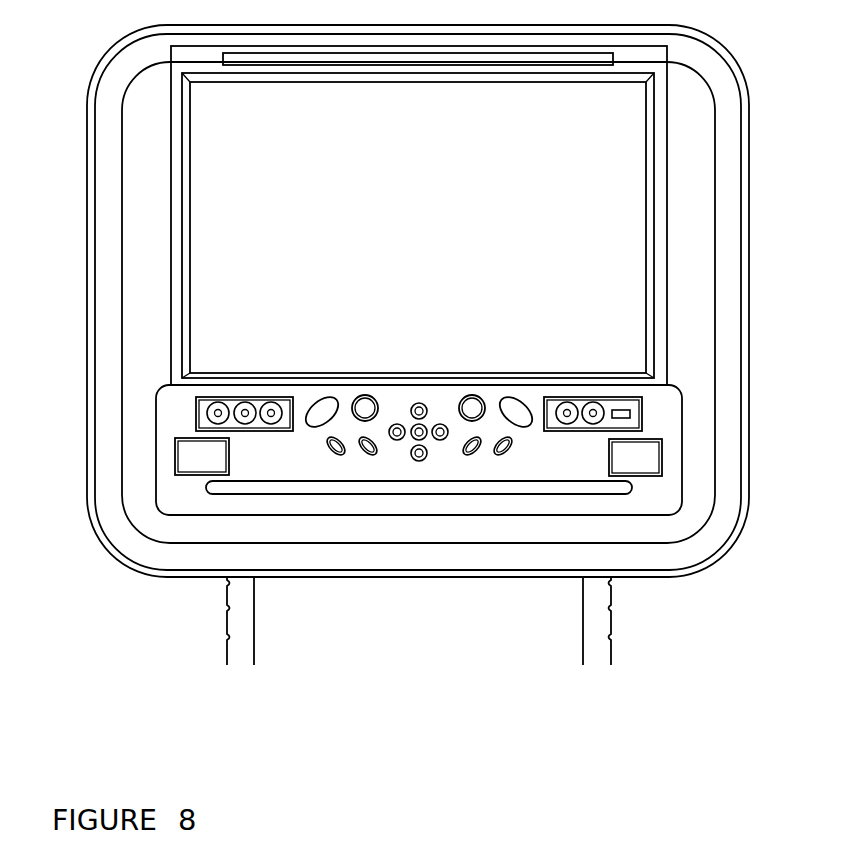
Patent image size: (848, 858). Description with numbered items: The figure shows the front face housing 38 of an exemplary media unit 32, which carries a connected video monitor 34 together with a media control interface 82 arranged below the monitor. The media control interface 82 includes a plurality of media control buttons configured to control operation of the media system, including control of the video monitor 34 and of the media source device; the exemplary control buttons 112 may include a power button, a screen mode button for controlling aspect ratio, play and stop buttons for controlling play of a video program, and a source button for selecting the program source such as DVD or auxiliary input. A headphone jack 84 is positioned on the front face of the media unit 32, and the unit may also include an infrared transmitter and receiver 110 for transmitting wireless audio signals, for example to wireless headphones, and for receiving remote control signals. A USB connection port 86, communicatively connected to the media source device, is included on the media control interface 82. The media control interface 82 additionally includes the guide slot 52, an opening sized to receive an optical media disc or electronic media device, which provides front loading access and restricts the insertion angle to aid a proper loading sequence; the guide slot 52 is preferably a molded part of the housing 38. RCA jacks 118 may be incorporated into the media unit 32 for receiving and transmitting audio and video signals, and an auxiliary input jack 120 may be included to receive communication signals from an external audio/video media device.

The media unit 32 is at (112, 88).
The video monitor 34 is at (430, 238).
The front face housing 38 is at (668, 578).
The guide slot 52 is at (388, 483).
The media control interface 82 is at (685, 385).
The headphone jack 84 is at (250, 410).
The USB connection port 86 is at (202, 412).
The infrared transmitter and receiver 110 is at (201, 457).
The control buttons 112 is at (422, 435).
The RCA jacks 118 is at (565, 412).
The auxiliary input jack 120 is at (273, 410).